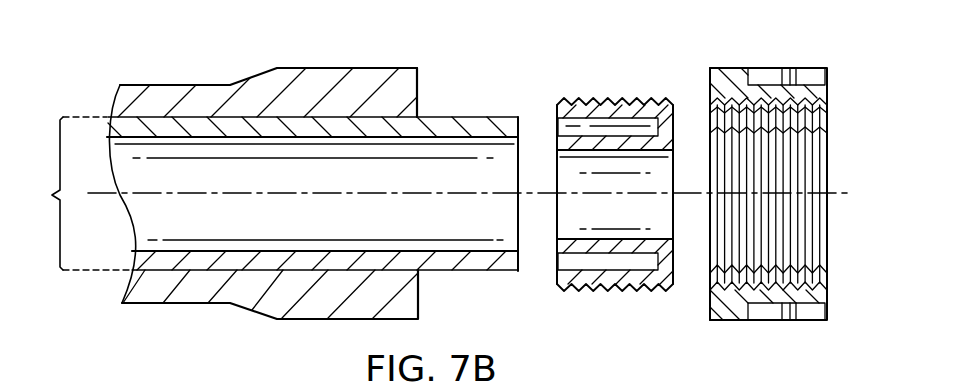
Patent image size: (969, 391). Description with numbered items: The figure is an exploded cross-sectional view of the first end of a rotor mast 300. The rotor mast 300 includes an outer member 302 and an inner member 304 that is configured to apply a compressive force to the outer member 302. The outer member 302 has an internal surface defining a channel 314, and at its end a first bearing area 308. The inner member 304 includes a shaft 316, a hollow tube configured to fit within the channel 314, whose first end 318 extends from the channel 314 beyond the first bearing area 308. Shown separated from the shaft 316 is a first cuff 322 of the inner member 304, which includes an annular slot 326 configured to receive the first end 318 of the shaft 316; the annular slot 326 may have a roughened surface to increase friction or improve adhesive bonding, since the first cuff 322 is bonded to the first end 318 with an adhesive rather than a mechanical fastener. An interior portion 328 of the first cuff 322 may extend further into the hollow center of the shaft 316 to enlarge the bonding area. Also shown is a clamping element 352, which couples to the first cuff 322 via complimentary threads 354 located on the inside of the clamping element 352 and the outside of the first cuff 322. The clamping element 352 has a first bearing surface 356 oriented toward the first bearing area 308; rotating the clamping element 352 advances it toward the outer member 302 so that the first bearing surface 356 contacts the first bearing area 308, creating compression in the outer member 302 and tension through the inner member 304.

The rotor mast 300 is at (101, 52).
The outer member 302 is at (172, 81).
The inner member 304 is at (509, 112).
The first bearing area 308 is at (418, 84).
The channel 314 is at (70, 193).
The shaft 316 is at (150, 246).
The first end 318 is at (443, 263).
The first cuff 322 is at (676, 270).
The annular slot 326 is at (565, 262).
The interior portion 328 is at (586, 143).
The clamping element 352 is at (811, 68).
The complimentary threads 354 is at (648, 99).
The first bearing surface 356 is at (710, 78).